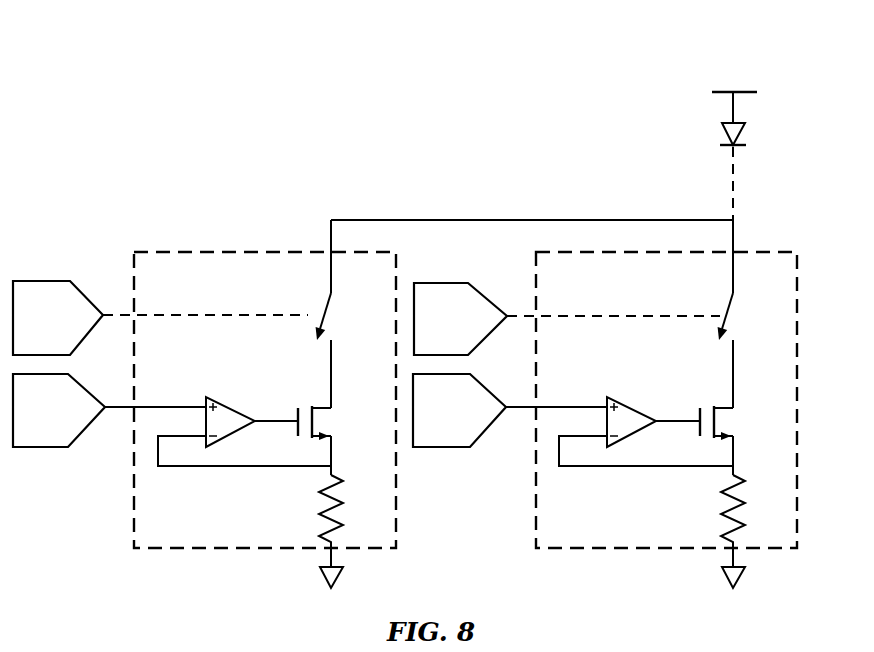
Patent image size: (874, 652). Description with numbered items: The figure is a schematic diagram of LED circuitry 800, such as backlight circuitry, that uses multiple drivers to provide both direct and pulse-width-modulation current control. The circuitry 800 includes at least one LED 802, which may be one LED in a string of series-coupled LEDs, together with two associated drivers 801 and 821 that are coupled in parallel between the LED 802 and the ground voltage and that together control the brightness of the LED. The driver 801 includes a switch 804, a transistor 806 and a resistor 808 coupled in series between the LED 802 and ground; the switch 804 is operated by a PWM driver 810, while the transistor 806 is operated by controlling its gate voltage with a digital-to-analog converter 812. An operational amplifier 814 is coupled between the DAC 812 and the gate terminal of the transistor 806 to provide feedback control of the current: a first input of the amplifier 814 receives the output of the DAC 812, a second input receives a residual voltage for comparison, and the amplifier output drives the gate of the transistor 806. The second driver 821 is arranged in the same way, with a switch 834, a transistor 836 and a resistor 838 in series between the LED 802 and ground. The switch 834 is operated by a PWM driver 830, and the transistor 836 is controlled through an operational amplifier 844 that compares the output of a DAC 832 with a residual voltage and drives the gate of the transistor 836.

The LED circuitry 800 is at (14, 77).
The driver 801 is at (575, 252).
The LED 802 is at (768, 128).
The switch 804 is at (749, 320).
The transistor 806 is at (735, 420).
The resistor 808 is at (766, 517).
The PWM driver 810 is at (440, 282).
The digital-to-analog converter 812 is at (441, 447).
The operational amplifier 814 is at (630, 405).
The driver 821 is at (172, 252).
The PWM driver 830 is at (33, 281).
The digital-to-analog converter 832 is at (40, 447).
The switch 834 is at (331, 280).
The transistor 836 is at (334, 420).
The resistor 838 is at (365, 517).
The operational amplifier 844 is at (237, 412).